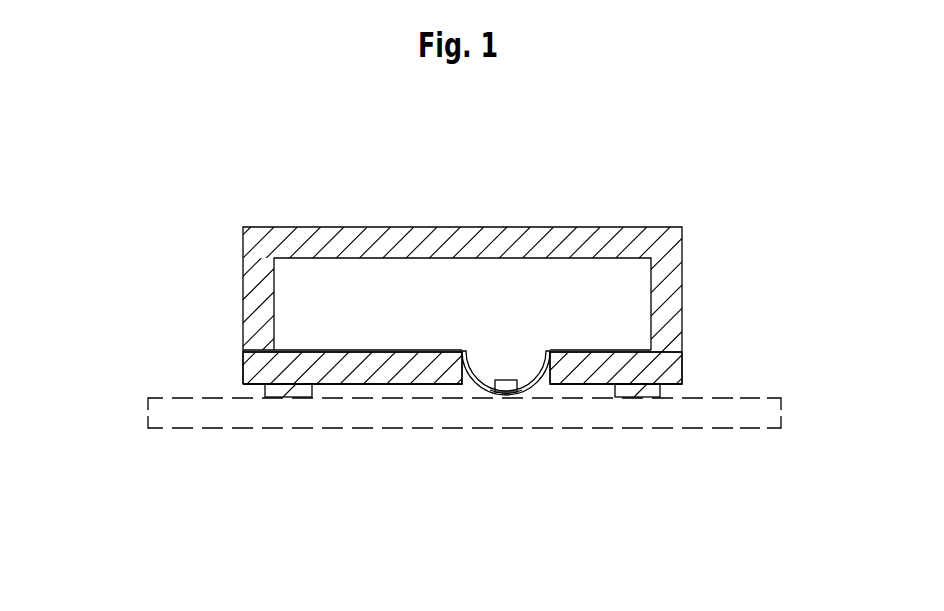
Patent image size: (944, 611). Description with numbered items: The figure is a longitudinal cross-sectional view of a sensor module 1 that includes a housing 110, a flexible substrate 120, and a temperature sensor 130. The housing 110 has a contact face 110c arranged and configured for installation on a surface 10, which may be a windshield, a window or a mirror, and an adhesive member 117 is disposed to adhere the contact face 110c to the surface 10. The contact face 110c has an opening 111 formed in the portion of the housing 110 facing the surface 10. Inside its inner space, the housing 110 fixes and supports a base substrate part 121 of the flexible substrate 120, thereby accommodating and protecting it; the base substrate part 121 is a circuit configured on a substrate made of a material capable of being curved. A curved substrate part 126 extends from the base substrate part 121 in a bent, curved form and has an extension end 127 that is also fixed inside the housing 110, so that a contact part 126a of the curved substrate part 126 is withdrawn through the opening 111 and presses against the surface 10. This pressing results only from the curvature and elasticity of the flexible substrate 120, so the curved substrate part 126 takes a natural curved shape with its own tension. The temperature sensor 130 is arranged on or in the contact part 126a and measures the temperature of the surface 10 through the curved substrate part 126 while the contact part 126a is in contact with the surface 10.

The sensor module 1 is at (214, 170).
The surface 10 is at (735, 398).
The housing 110 is at (257, 310).
The contact face 110c is at (407, 385).
The opening 111 is at (512, 363).
The adhesive member 117 is at (293, 388).
The flexible substrate 120 is at (592, 155).
The base substrate part 121 is at (370, 350).
The curved substrate part 126 is at (483, 378).
The contact part 126a is at (508, 388).
The extension end 127 is at (600, 350).
The temperature sensor 130 is at (510, 390).